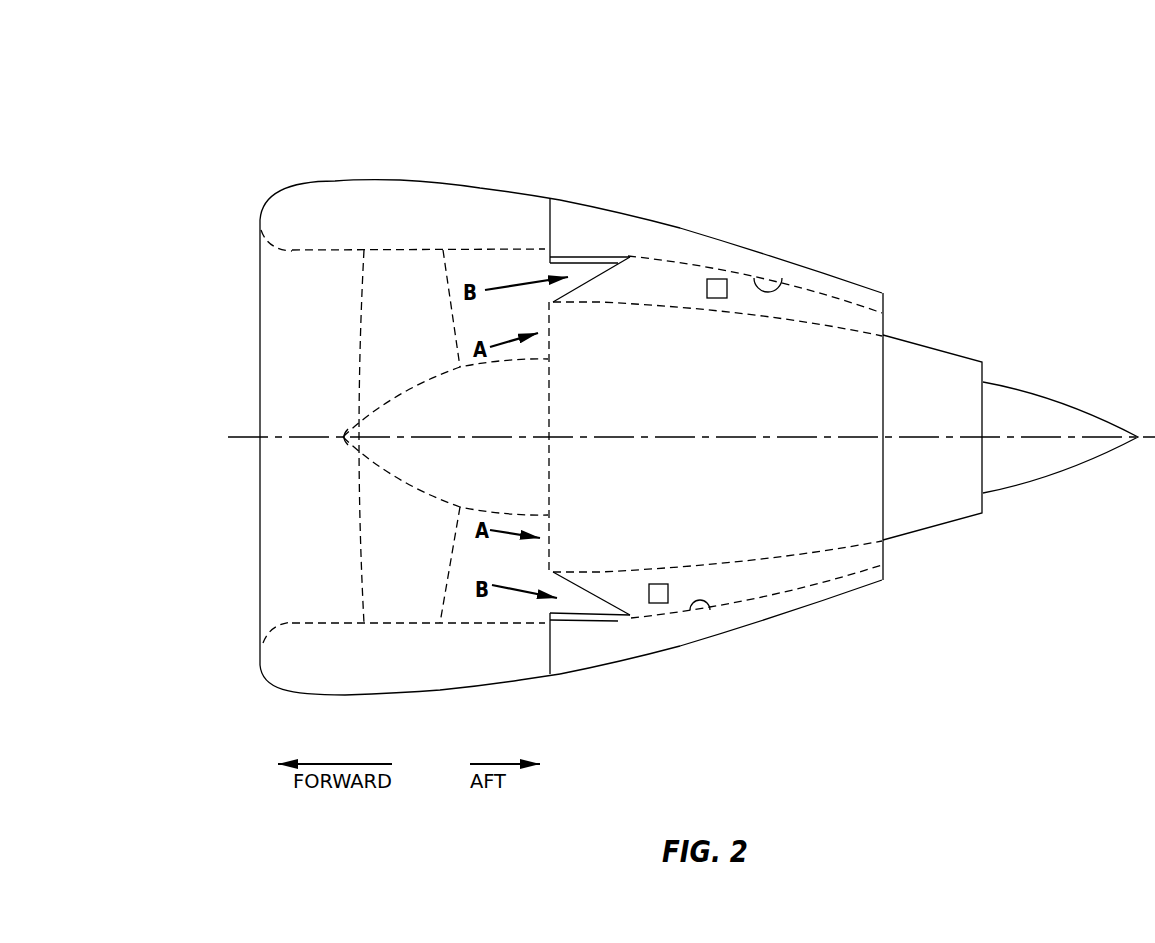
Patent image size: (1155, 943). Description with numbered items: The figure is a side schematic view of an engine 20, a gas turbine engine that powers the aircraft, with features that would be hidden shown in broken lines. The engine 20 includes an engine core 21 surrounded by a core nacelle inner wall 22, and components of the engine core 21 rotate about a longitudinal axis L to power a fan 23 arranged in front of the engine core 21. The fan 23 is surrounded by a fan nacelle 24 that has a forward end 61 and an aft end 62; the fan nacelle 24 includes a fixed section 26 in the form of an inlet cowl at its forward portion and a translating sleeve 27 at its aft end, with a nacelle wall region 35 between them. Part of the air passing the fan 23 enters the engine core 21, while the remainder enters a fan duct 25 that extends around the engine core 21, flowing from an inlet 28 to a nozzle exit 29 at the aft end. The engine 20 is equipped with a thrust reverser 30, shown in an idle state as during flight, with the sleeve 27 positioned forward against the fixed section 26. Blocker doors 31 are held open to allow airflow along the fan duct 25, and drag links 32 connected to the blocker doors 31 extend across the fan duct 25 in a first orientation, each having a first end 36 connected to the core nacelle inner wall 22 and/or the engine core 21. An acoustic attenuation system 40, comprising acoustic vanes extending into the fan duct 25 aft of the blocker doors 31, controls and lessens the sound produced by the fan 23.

The engine 20 is at (968, 170).
The engine core 21 is at (755, 422).
The core nacelle inner wall 22 is at (628, 297).
The fan 23 is at (377, 532).
The fan nacelle 24 is at (298, 200).
The fan duct 25 is at (667, 292).
The fixed section 26 is at (282, 223).
The translating sleeve 27 is at (698, 227).
The inlet 28 is at (537, 270).
The nozzle exit 29 is at (802, 265).
The thrust reverser 30 is at (628, 97).
The blocker doors 31 is at (560, 266).
The drag links 32 is at (604, 270).
The nacelle wall 35 is at (590, 218).
The first end 36 is at (553, 303).
The acoustic attenuation system 40 is at (718, 283).
The forward end 61 is at (260, 665).
The aft end 62 is at (885, 578).
The longitudinal axis L is at (243, 435).